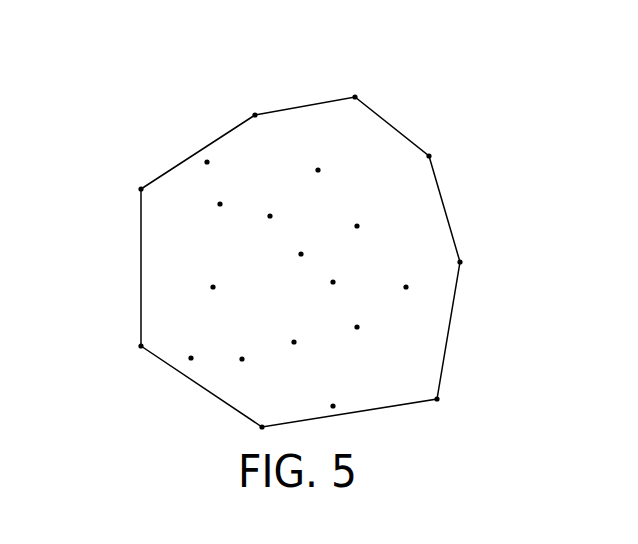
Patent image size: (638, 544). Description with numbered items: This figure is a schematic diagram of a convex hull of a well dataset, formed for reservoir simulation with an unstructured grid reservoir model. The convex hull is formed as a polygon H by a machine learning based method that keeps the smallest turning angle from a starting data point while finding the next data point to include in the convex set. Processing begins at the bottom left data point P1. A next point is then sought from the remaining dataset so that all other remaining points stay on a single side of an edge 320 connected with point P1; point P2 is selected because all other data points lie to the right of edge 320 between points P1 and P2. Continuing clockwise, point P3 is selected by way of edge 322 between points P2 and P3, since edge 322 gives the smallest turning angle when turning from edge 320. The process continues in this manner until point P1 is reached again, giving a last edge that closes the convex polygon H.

The edge 320 is at (141, 250).
The edge 322 is at (188, 159).
The polygon H is at (127, 300).
The bottom left data point P1 is at (124, 350).
The point P2 is at (123, 192).
The point P3 is at (240, 104).